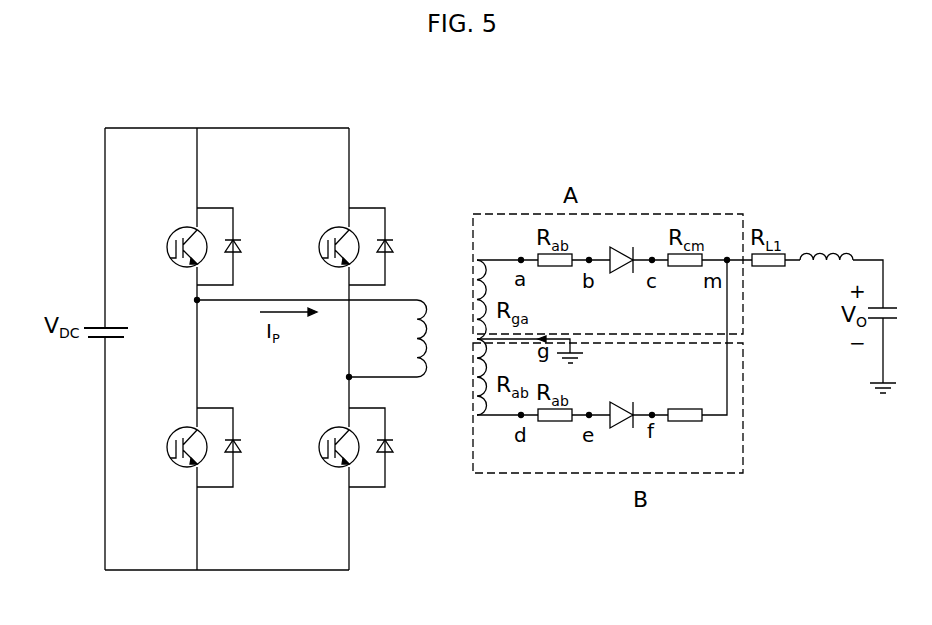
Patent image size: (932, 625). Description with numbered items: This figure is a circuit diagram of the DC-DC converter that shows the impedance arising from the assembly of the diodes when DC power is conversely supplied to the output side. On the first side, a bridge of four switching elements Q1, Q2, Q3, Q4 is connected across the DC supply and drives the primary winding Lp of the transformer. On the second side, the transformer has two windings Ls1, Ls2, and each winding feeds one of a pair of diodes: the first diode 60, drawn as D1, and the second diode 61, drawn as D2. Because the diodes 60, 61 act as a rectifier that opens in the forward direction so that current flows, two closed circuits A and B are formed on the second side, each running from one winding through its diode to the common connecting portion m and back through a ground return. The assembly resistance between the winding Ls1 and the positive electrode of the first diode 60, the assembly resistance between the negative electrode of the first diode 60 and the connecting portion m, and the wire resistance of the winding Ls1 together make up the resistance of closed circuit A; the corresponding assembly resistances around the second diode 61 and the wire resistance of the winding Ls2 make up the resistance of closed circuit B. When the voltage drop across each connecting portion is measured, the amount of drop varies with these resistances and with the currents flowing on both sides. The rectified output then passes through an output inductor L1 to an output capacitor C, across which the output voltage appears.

The first diode 60 is at (623, 240).
The second diode 61 is at (612, 468).
The first switching transistor Q1 is at (191, 246).
The second switching transistor Q2 is at (191, 447).
The third switching transistor Q3 is at (342, 246).
The fourth switching transistor Q4 is at (342, 447).
The first rectifier diode D1 is at (624, 279).
The second rectifier diode D2 is at (624, 434).
The transformer primary winding Lp is at (405, 338).
The Ls1 transformer Ls1 is at (459, 299).
The Ls2 transformer Ls2 is at (460, 377).
The output inductor L1 is at (826, 242).
The output capacitor C is at (893, 315).